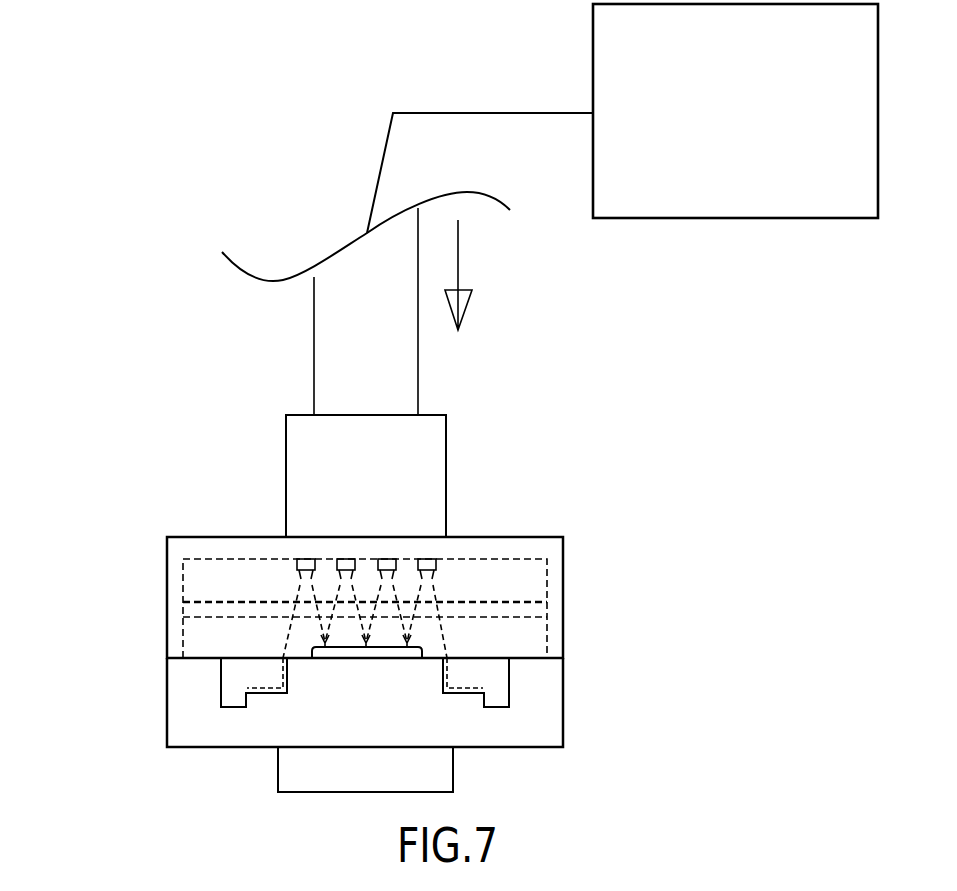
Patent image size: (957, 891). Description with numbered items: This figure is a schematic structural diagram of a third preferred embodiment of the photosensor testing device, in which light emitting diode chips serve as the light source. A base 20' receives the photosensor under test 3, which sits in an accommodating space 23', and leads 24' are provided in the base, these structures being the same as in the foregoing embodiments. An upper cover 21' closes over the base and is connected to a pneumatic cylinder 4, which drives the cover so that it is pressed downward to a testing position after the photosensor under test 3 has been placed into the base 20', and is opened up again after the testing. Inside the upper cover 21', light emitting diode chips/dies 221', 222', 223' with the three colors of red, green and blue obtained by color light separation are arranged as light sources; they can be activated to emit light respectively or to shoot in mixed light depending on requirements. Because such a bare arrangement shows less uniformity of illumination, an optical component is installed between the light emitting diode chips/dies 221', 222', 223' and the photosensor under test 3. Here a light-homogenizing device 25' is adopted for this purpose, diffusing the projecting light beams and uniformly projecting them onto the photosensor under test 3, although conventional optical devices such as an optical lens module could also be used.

The pneumatic cylinder 4 is at (807, 207).
The upper cover 21' is at (306, 519).
The base 20' is at (425, 698).
The light-homogenizing device 25' is at (492, 583).
The accommodating space 23' is at (304, 608).
The photosensor under test 3 is at (363, 658).
The leads 24' is at (278, 701).
The light emitting diode chip/die 223' is at (264, 493).
The light emitting diode chip/die 222' is at (501, 506).
The light emitting diode chip/die 221' is at (553, 563).